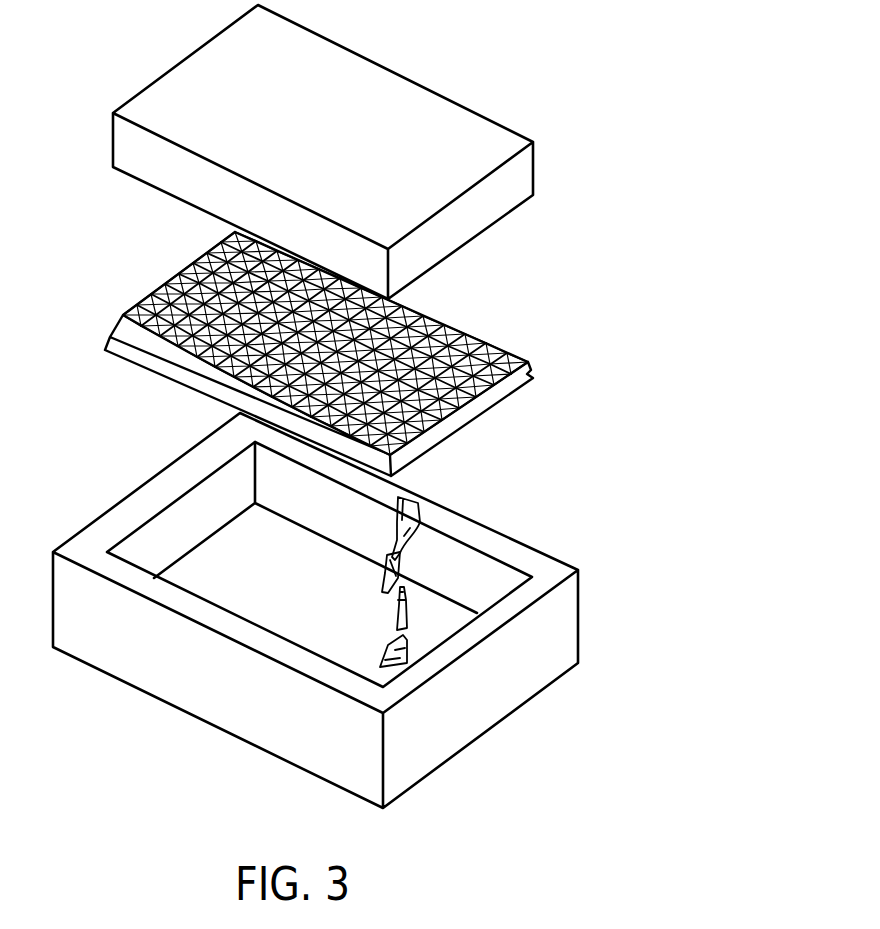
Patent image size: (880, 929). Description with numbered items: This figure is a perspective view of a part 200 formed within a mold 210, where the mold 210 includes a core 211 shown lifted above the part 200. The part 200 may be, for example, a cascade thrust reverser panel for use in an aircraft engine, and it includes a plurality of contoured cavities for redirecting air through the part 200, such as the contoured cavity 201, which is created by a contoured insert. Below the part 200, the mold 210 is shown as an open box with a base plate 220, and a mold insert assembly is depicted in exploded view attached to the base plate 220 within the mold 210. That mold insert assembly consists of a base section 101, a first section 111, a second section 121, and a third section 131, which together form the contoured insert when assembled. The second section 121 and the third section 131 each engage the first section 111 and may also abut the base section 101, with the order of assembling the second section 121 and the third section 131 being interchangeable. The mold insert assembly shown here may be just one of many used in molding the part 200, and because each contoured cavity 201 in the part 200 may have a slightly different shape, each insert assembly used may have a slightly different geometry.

The core 211 is at (172, 90).
The part 200 is at (330, 354).
The contoured cavity 201 is at (392, 390).
The mold 210 is at (295, 610).
The base plate 220 is at (317, 627).
The second section 121 is at (410, 513).
The third section 131 is at (395, 560).
The first section 111 is at (407, 627).
The base section 101 is at (398, 667).